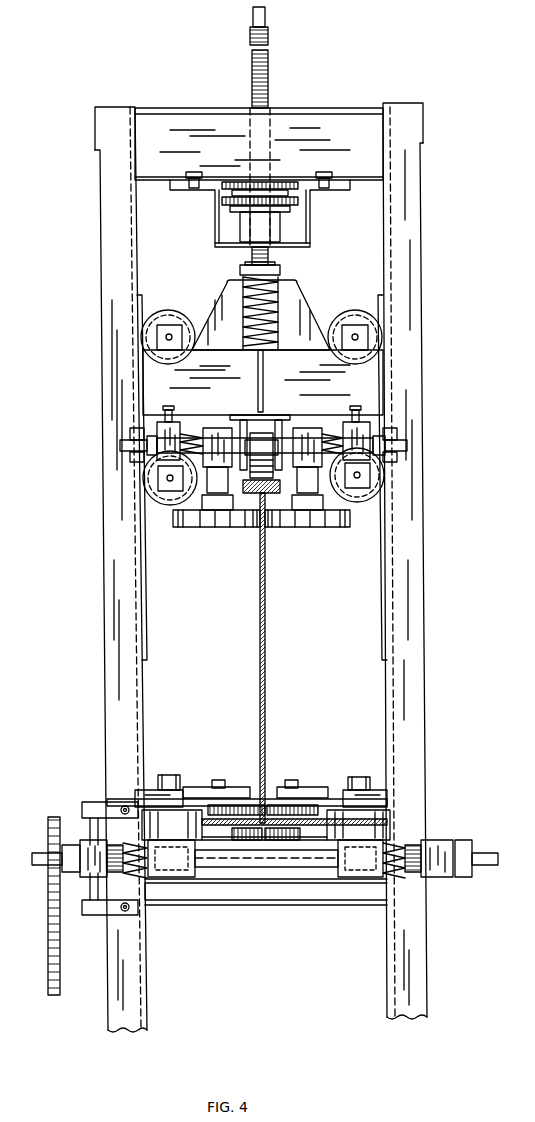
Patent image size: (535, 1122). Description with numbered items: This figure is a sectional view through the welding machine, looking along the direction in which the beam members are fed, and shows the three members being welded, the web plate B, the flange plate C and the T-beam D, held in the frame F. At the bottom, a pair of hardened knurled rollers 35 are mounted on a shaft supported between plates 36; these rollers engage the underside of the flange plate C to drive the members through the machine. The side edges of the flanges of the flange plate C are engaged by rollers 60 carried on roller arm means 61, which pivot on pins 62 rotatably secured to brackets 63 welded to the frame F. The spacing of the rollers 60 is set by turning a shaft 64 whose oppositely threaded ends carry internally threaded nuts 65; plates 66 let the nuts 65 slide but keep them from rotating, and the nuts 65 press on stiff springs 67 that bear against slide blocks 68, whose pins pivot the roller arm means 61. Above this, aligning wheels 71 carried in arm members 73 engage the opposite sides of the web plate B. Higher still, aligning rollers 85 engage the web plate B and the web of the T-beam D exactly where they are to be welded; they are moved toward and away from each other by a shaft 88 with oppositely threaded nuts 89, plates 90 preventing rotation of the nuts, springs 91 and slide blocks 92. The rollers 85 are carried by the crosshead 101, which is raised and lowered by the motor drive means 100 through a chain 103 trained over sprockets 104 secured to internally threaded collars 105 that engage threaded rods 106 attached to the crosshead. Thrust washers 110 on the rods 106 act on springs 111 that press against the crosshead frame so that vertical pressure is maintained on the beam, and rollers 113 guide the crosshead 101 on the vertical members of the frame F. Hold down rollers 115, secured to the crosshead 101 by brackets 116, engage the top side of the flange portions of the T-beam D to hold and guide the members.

The frame F is at (302, 143).
The motor drive means 100 is at (216, 197).
The chain 103 is at (270, 194).
The sprockets 104 is at (302, 126).
The internally threaded collars 105 is at (240, 226).
The threaded rods 106 is at (287, 261).
The thrust washers 110 is at (292, 312).
The springs 111 is at (280, 306).
The crosshead 101 is at (332, 322).
The rollers 113 is at (183, 312).
The brackets 116 is at (244, 420).
The hold down rollers 115 is at (262, 432).
The springs 91 is at (177, 420).
The slide blocks 92 is at (218, 429).
The plates 90 is at (150, 426).
The internally threaded nuts 89 is at (148, 442).
The shaft 88 is at (405, 450).
The aligning rollers 85 is at (220, 528).
The T-beam D is at (266, 510).
The web plate B is at (260, 640).
The roller arm means 61 is at (136, 795).
The pins 62 is at (170, 776).
The brackets 63 is at (157, 790).
The arm members 73 is at (190, 790).
The aligning wheels 71 is at (224, 786).
The flange plate C is at (318, 822).
The rollers 60 is at (198, 841).
The shaft 64 is at (48, 852).
The plates 66 is at (90, 830).
The internally threaded nuts 65 is at (110, 878).
The springs 67 is at (143, 877).
The slide blocks 68 is at (188, 878).
The hardened knurled rollers 35 is at (252, 841).
The plates 36 is at (300, 841).